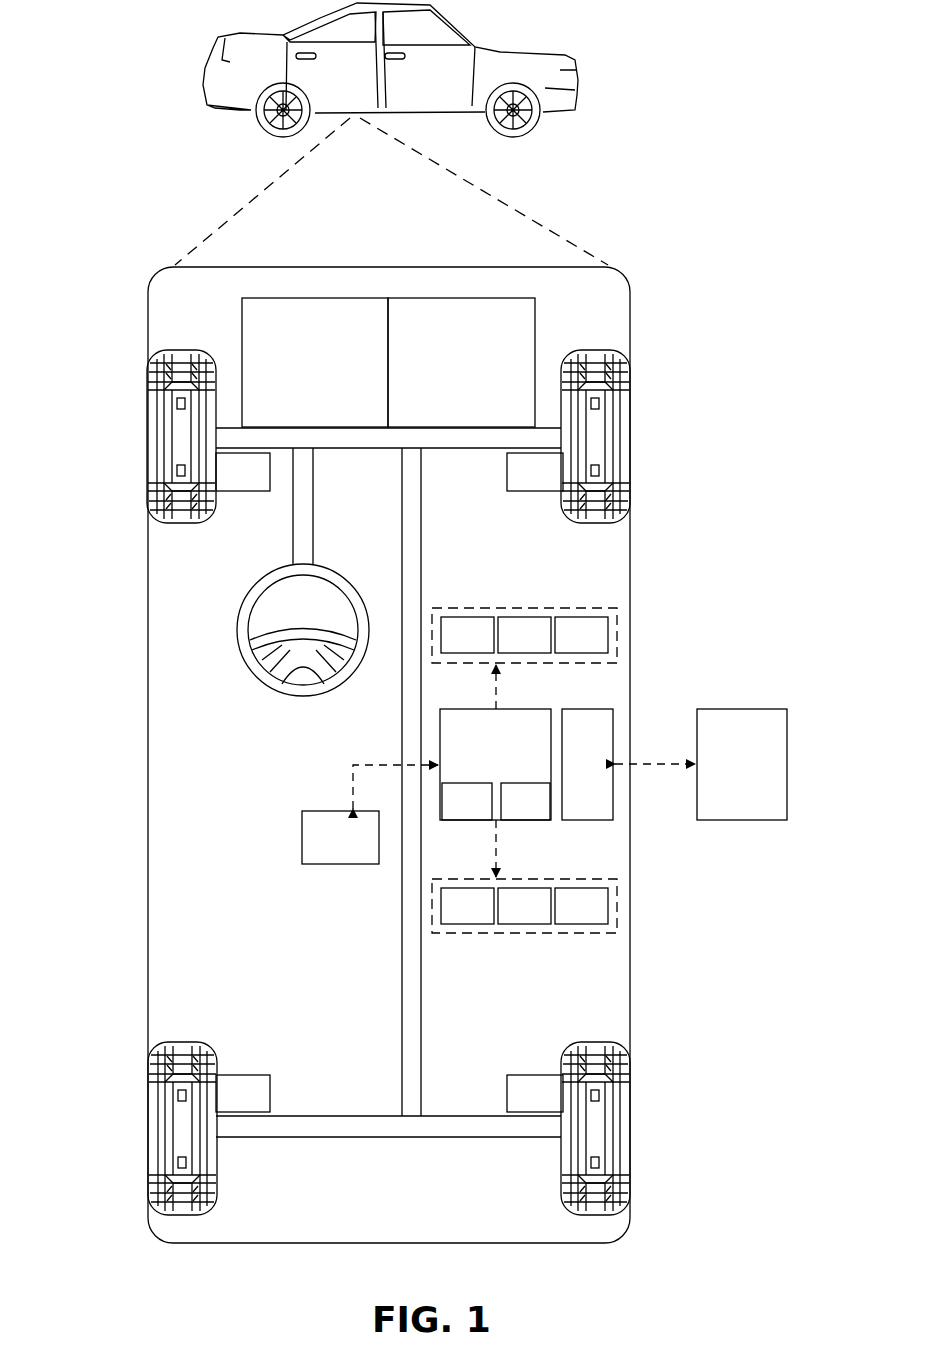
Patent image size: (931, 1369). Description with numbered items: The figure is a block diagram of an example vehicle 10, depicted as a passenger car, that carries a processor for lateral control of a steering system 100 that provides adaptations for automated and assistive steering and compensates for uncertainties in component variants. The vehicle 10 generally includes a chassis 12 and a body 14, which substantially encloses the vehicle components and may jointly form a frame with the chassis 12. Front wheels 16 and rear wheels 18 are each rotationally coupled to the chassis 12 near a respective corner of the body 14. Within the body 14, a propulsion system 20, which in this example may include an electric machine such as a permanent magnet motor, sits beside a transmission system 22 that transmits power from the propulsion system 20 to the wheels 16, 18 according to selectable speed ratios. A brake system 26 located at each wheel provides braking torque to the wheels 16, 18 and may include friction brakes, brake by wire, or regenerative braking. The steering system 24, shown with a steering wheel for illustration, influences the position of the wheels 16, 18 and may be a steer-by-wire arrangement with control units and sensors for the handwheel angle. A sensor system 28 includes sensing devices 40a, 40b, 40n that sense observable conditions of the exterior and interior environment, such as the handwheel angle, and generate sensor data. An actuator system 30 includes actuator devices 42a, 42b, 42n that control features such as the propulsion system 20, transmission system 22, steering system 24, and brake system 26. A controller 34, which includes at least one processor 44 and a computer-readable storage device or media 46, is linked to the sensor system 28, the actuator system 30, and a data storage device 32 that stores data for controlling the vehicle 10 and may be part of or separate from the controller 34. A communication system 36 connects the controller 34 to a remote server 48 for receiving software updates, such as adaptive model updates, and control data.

The vehicle 10 is at (212, 55).
The steering system 100 is at (683, 258).
The chassis 12 is at (401, 1027).
The body 14 is at (148, 840).
The front wheels 16 is at (155, 437).
The rear wheels 18 is at (152, 1130).
The propulsion system 20 is at (315, 362).
The transmission system 22 is at (461, 362).
The steering system 24 is at (321, 481).
The brake system 26 is at (389, 782).
The sensor system 28 is at (497, 607).
The actuator system 30 is at (497, 936).
The data storage device 32 is at (340, 837).
The controller 34 is at (495, 764).
The communication system 36 is at (587, 764).
The sensing device 40a is at (467, 635).
The sensing device 40b is at (524, 635).
The sensing device 40n is at (581, 635).
The actuator device 42a is at (467, 906).
The actuator device 42b is at (524, 906).
The actuator device 42n is at (581, 906).
The processor 44 is at (467, 801).
The computer-readable storage device or media 46 is at (525, 801).
The remote server 48 is at (742, 764).